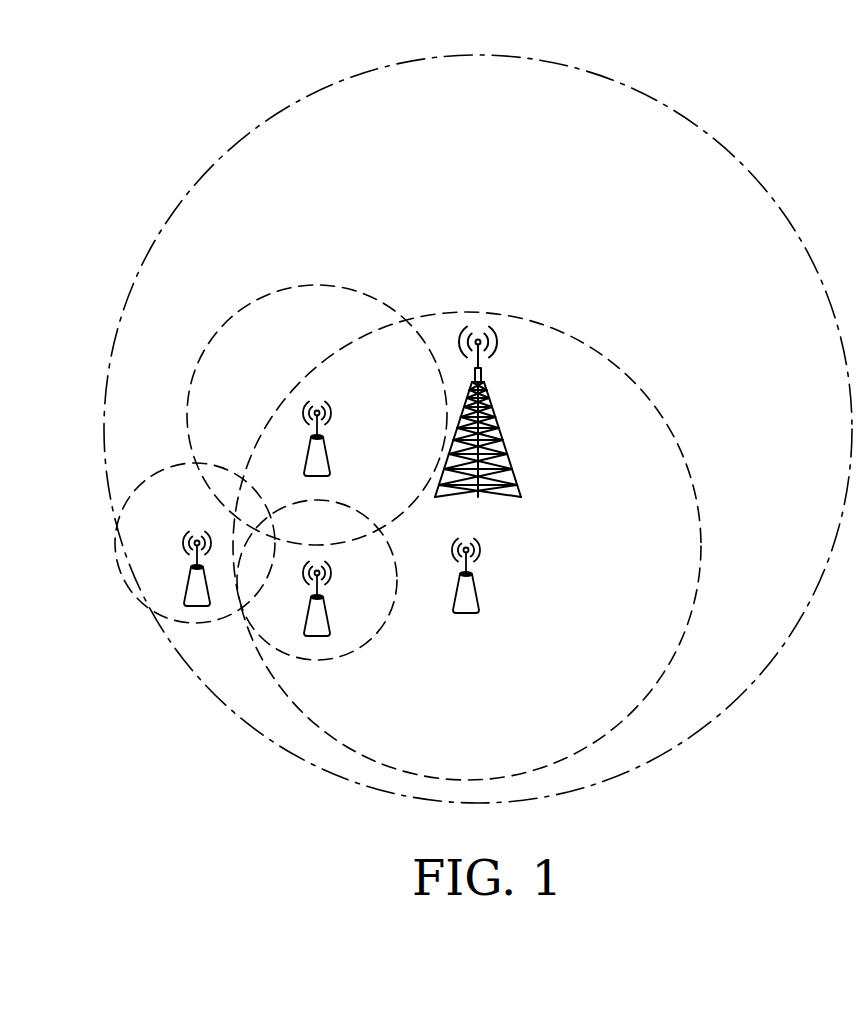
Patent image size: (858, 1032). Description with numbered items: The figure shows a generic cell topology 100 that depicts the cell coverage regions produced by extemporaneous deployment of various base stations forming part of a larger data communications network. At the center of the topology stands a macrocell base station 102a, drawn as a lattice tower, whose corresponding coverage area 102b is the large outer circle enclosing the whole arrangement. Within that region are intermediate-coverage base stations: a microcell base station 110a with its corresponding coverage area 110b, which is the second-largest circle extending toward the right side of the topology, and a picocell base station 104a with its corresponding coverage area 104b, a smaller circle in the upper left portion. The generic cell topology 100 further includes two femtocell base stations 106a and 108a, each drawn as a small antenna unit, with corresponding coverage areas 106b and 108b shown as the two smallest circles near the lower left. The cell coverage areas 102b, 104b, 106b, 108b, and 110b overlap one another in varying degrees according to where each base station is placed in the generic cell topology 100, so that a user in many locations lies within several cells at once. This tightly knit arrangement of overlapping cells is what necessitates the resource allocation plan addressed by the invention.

The generic cell topology 100 is at (98, 82).
The macrocell base station 102a is at (492, 430).
The macrocell coverage area 102b is at (188, 196).
The picocell base station 104a is at (333, 452).
The picocell coverage area 104b is at (345, 285).
The femtocell base station 106a is at (200, 606).
The femtocell coverage area 106b is at (132, 495).
The femtocell base station 108a is at (317, 637).
The femtocell coverage area 108b is at (340, 655).
The microcell base station 110a is at (466, 613).
The microcell coverage area 110b is at (668, 432).